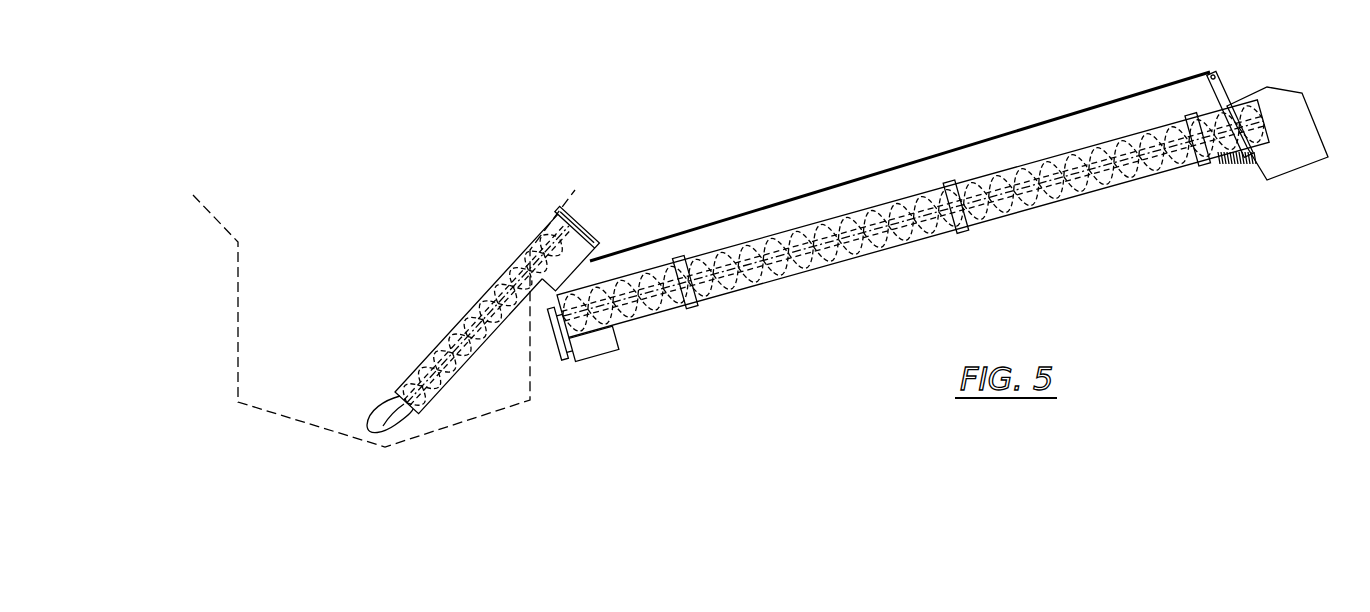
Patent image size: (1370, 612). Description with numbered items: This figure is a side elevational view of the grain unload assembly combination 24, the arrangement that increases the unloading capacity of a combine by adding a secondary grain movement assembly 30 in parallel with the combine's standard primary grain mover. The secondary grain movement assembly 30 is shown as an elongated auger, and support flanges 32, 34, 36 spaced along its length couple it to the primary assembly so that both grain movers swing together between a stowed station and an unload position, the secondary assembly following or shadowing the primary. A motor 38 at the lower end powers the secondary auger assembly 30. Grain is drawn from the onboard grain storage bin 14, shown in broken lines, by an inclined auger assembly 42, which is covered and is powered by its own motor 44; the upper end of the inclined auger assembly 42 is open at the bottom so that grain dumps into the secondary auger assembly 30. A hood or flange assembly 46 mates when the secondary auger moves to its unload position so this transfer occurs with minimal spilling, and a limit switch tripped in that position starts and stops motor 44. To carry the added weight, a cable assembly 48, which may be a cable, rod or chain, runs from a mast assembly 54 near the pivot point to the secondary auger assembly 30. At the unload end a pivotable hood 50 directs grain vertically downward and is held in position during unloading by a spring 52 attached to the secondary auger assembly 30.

The onboard grain storage bin 14 is at (239, 268).
The grain unload assembly combination 24 is at (766, 162).
The secondary grain movement assembly 30 is at (838, 264).
The support flange 32 is at (684, 308).
The support flange 34 is at (952, 231).
The support flange 36 is at (1203, 156).
The motor 38 is at (588, 352).
The inclined auger assembly 42 is at (483, 310).
The motor 44 is at (541, 232).
The hood or flange assembly 46 is at (584, 277).
The cable assembly 48 is at (976, 148).
The pivotable hood 50 is at (1290, 110).
The spring 52 is at (1247, 166).
The mast assembly 54 is at (1223, 84).